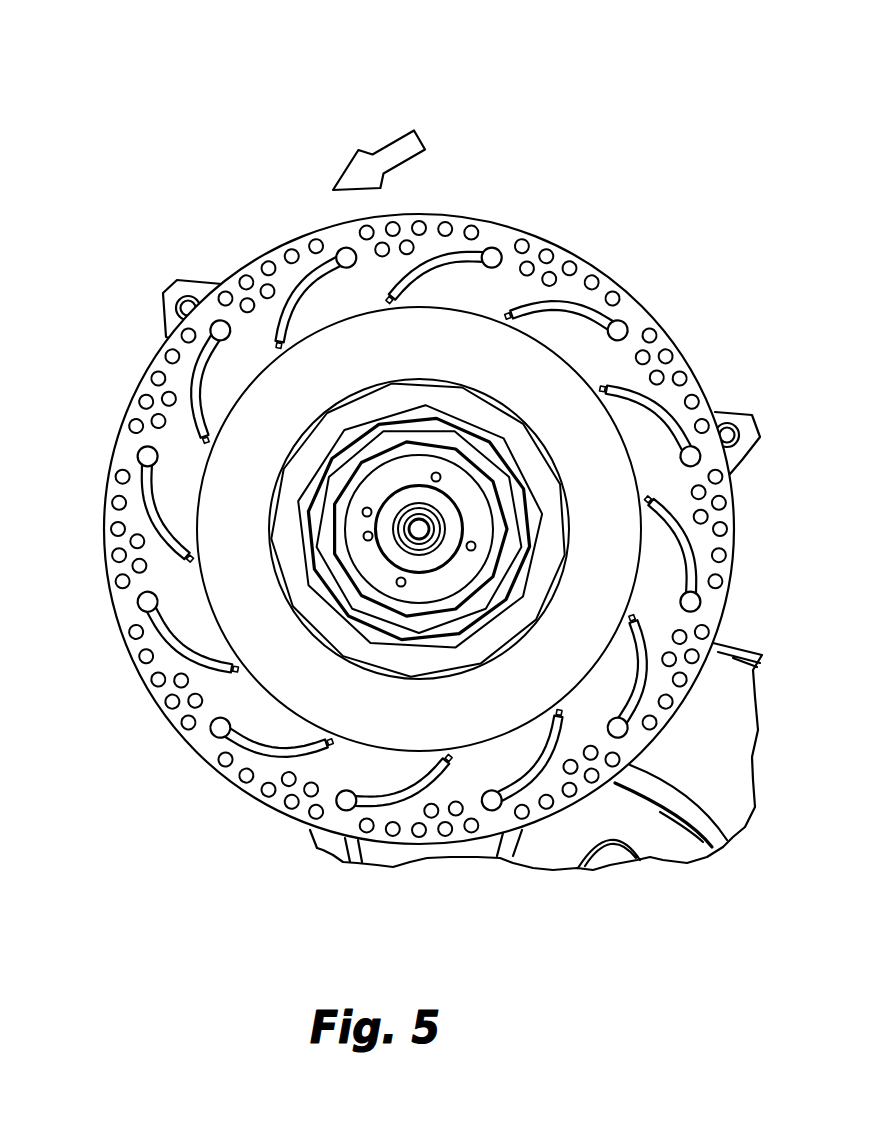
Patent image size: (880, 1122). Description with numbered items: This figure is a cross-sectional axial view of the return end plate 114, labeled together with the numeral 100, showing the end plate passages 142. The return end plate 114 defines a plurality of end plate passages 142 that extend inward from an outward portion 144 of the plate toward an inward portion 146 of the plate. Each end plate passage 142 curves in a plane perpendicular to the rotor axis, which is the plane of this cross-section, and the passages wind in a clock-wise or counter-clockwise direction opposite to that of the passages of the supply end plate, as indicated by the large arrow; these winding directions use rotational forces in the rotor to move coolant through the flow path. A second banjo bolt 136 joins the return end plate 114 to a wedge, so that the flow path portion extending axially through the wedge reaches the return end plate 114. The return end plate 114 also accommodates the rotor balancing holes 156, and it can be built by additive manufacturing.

The brake assembly 100 is at (116, 222).
The return end plate 114 is at (423, 507).
The second banjo bolt 136 is at (492, 247).
The end plate passages 142 is at (453, 263).
The outward portion 144 is at (576, 252).
The inward portion 146 is at (493, 397).
The rotor balancing holes 156 is at (685, 377).